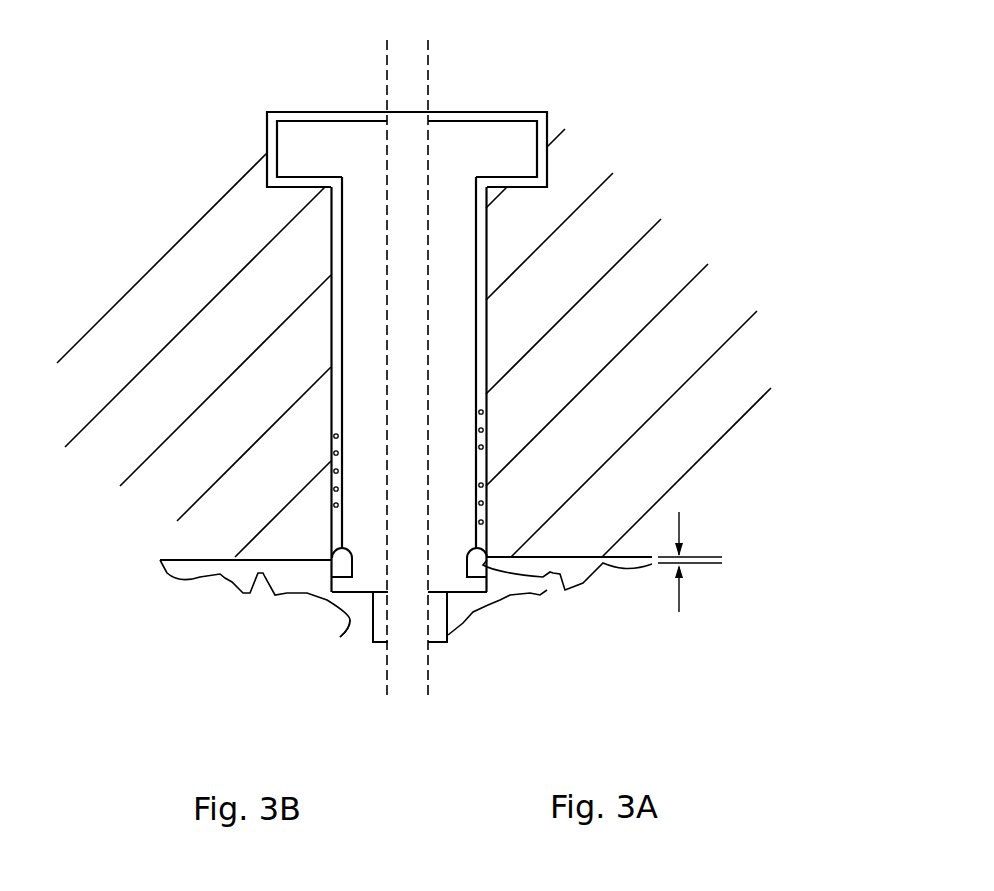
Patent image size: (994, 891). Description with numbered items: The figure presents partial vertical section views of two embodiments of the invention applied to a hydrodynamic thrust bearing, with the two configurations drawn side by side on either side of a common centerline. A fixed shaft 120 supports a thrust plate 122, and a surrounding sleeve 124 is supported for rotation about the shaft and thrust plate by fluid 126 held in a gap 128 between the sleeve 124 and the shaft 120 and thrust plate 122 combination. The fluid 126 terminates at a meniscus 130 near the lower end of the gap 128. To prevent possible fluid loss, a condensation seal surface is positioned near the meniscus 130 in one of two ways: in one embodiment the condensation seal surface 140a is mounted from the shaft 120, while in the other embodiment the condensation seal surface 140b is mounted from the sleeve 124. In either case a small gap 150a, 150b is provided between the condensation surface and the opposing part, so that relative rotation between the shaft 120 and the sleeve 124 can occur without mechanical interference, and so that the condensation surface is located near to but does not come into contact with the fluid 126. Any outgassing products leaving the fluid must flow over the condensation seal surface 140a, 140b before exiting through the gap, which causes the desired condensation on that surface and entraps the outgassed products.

In FIG. 3A, the fixed shaft 120 is at (408, 367).
In FIG. 3B, the thrust plate 122 is at (337, 149).
In FIG. 3A, the thrust plate 122 is at (467, 149).
In FIG. 3B, the sleeve 124 is at (194, 355).
In FIG. 3A, the sleeve 124 is at (628, 343).
In FIG. 3B, the fluid 126 is at (343, 465).
In FIG. 3A, the fluid 126 is at (481, 467).
In FIG. 3B, the gap 128 is at (337, 350).
In FIG. 3A, the gap 128 is at (457, 409).
In FIG. 3A, the meniscus 130 is at (532, 576).
In FIG. 3A, the condensation seal surface 140a is at (498, 600).
In FIG. 3B, the condensation seal surface 140b is at (247, 593).
In FIG. 3A, the small gap 150a is at (723, 560).
In FIG. 3B, the small gap 150b is at (358, 638).